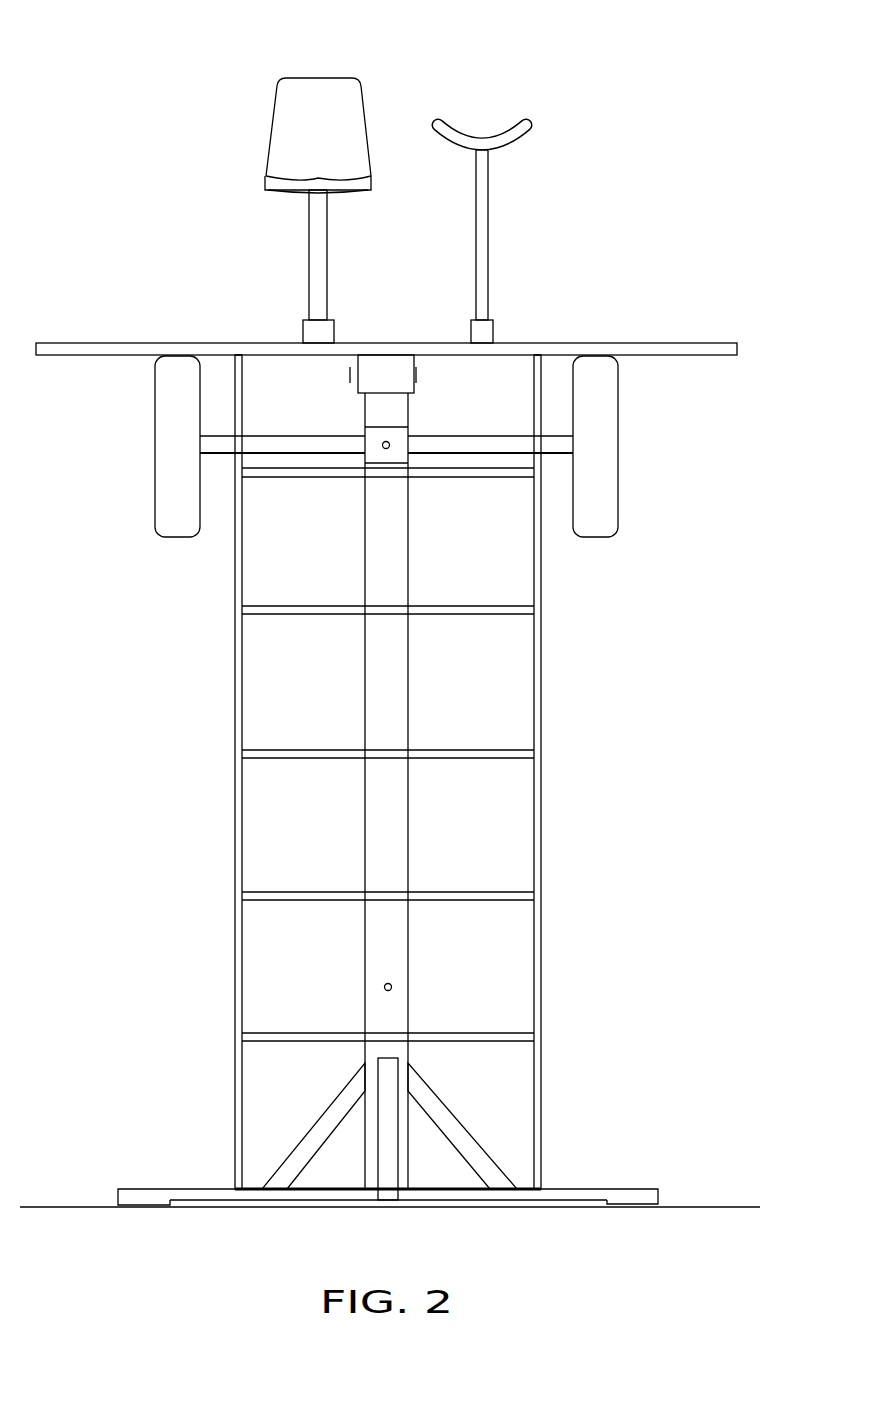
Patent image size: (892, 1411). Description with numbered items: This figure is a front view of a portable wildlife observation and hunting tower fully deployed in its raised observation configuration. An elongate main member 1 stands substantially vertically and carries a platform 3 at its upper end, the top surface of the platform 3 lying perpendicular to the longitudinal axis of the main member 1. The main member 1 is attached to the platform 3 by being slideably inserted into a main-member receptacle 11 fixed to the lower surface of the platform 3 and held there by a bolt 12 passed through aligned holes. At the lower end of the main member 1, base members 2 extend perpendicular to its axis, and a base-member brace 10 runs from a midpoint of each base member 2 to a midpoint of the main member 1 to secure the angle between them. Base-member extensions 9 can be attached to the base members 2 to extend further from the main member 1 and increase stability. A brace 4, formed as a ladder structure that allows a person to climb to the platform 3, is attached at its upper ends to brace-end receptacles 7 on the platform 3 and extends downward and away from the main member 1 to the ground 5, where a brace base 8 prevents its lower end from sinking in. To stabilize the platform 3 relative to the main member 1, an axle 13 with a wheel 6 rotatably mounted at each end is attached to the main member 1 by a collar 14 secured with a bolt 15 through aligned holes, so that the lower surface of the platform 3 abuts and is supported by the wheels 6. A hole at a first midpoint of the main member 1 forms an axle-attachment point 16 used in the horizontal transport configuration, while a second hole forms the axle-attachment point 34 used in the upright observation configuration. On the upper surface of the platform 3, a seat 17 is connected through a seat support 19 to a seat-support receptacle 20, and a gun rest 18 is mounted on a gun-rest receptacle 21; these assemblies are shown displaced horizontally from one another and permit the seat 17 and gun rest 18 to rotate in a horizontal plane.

The main member 1 is at (410, 826).
The base members 2 is at (333, 1195).
The platform 3 is at (700, 343).
The brace 4 is at (542, 722).
The ground 5 is at (712, 1206).
The wheel 6 is at (155, 478).
The brace-end receptacles 7 is at (241, 356).
The brace base 8 is at (580, 1188).
The base-member extension 9 is at (135, 1188).
The base-member brace 10 is at (388, 1058).
The main-member receptacle 11 is at (418, 375).
The bolt 12 is at (348, 375).
The axle 13 is at (484, 448).
The collar 14 is at (373, 458).
The bolt 15 is at (390, 443).
The axle-attachment point 16 is at (391, 986).
The seat 17 is at (318, 77).
The gun rest 18 is at (507, 128).
The seat support 19 is at (328, 238).
The seat-support receptacle 20 is at (334, 328).
The gun-rest receptacle 21 is at (493, 328).
The axle-attachment point 34 is at (383, 443).